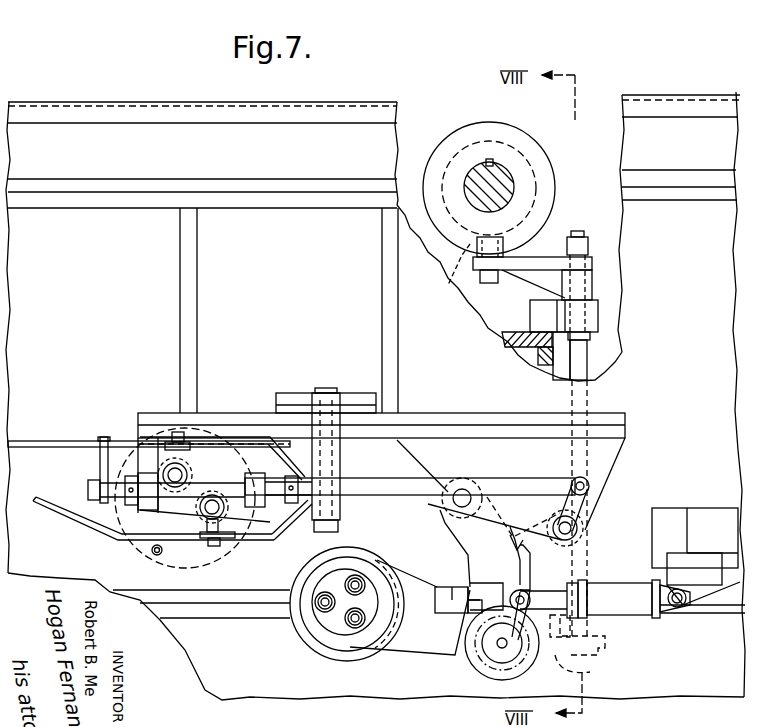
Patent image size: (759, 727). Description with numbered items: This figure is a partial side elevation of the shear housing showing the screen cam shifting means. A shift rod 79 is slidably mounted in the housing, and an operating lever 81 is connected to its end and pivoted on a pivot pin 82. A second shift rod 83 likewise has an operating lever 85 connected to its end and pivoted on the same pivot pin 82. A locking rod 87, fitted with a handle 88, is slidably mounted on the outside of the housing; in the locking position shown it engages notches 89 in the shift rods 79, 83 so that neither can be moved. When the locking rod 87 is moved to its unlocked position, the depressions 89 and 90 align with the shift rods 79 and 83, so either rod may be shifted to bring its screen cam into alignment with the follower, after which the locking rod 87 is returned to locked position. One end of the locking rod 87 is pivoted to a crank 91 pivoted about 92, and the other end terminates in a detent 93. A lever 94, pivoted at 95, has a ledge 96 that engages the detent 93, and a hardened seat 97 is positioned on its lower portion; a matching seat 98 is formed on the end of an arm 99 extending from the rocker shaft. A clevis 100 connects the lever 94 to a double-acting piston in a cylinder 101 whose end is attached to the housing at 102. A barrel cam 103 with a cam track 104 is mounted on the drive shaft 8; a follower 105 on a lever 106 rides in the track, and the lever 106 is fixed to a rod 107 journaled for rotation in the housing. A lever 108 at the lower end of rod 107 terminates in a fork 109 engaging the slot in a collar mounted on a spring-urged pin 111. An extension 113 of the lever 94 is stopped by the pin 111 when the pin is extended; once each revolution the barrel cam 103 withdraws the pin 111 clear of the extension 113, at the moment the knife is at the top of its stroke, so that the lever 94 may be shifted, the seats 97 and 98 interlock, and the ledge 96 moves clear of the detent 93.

The drive shaft 8 is at (508, 185).
The shift rod 79 is at (177, 468).
The operating lever 81 is at (52, 424).
The pivot pin 82 is at (330, 390).
The second shift rod 83 is at (220, 510).
The operating lever 85 is at (52, 495).
The locking rod 87 is at (388, 479).
The handle 88 is at (115, 421).
The notches 89 is at (198, 482).
The depressions 90 is at (233, 485).
The crank 91 is at (588, 506).
The pivot 92 is at (572, 533).
The detent 93 is at (516, 538).
The lever 94 is at (470, 540).
The pivot 95 is at (452, 509).
The ledge 96 is at (520, 556).
The hardened seat 97 is at (470, 614).
The matching seat 98 is at (445, 587).
The arm 99 is at (400, 648).
The clevis 100 is at (540, 592).
The cylinder 101 is at (618, 590).
The attachment point 102 is at (678, 604).
The barrel cam 103 is at (478, 124).
The cam track 104 is at (515, 145).
The follower 105 is at (462, 280).
The lever 106 is at (553, 252).
The rod 107 is at (582, 355).
The lever 108 is at (592, 668).
The fork 109 is at (492, 678).
The pin 111 is at (500, 643).
The extension 113 is at (515, 668).